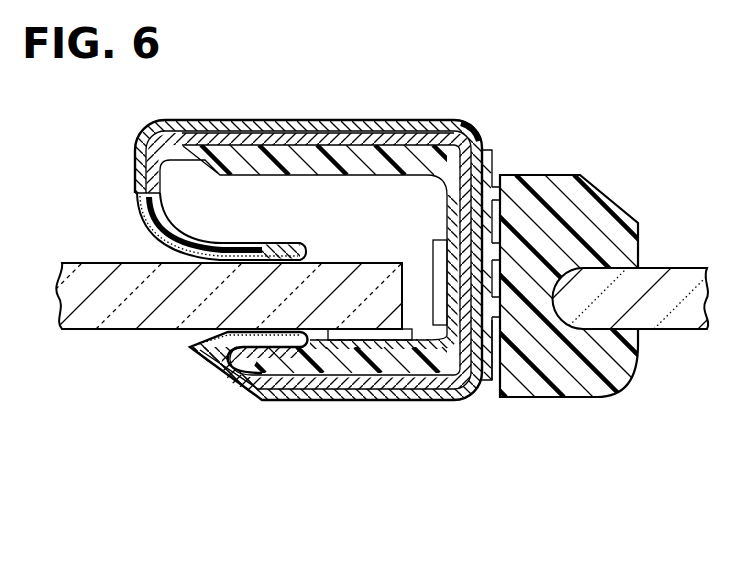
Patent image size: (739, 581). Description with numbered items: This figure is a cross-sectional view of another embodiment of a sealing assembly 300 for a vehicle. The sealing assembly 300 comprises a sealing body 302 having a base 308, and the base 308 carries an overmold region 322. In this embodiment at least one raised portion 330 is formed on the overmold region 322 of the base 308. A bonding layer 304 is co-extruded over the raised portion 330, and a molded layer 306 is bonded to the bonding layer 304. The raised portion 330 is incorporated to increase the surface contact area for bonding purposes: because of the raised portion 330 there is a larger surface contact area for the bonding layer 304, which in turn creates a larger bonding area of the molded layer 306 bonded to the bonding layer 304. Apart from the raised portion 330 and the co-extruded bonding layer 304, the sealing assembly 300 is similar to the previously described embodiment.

The sealing assembly 300 is at (383, 462).
The sealing body 302 is at (446, 124).
The bonding layer 304 is at (498, 326).
The molded layer 306 is at (618, 373).
The base 308 is at (485, 160).
The overmold region 322 is at (487, 317).
The raised portion 330 is at (484, 316).